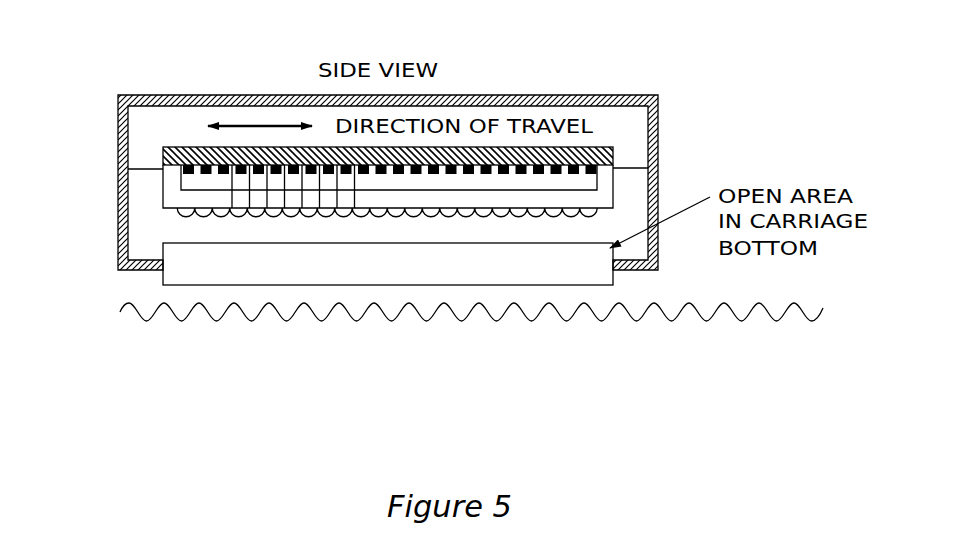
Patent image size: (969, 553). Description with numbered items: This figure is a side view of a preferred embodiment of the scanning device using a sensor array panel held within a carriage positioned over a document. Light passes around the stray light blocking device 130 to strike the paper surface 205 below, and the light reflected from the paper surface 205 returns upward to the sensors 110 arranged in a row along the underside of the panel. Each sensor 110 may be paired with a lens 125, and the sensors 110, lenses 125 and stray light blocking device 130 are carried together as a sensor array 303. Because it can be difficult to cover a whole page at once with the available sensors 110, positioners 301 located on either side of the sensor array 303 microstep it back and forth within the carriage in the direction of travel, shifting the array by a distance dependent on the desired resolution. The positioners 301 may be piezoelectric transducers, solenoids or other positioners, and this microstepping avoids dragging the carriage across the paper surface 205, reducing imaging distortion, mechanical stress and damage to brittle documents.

The sensor 110 is at (206, 172).
The lens 125 is at (242, 219).
The stray light blocking device 130 is at (357, 182).
The paper surface 205 is at (676, 319).
The positioner 301 is at (153, 165).
The sensor array 303 is at (160, 215).